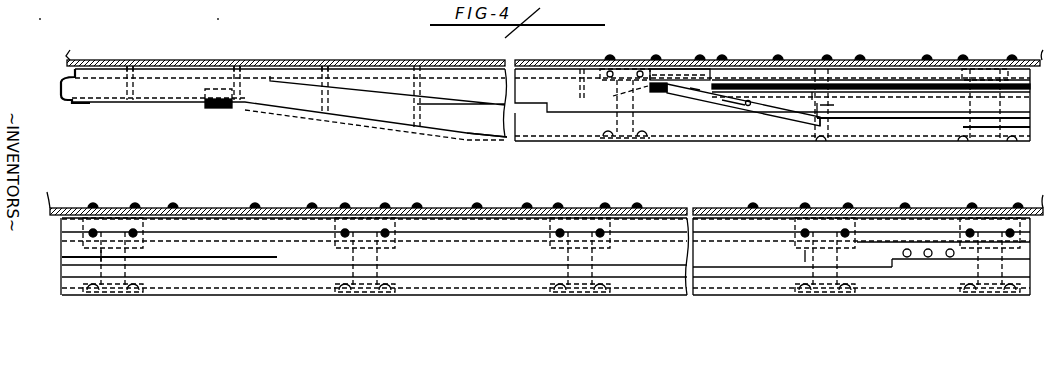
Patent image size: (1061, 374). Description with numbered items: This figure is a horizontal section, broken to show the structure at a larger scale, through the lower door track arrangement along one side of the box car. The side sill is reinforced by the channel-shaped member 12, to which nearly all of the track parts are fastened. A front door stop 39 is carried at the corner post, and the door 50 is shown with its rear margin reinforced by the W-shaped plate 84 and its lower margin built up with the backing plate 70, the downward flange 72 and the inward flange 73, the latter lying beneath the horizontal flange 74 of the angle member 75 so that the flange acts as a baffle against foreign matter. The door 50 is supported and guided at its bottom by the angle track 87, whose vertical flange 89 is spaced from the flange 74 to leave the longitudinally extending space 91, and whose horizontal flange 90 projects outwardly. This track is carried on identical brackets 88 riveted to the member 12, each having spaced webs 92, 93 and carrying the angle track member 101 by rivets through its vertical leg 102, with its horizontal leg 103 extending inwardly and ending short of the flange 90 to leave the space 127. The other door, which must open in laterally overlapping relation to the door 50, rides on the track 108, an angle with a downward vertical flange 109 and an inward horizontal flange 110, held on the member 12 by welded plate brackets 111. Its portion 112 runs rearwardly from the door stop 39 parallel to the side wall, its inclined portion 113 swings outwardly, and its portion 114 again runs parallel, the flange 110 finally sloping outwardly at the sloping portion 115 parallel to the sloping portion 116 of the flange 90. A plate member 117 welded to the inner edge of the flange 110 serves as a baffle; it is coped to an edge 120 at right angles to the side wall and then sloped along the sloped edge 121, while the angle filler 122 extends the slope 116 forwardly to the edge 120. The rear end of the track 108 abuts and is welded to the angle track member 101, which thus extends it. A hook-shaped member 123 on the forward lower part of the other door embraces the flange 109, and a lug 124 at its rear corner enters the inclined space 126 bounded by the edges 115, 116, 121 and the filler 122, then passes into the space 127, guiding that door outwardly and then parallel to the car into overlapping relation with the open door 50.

The channel-shaped member 12 is at (318, 62).
The front door stop 39 is at (62, 102).
The door 50 is at (40, 10).
The backing plate 70 is at (795, 92).
The downward flange 72 is at (813, 98).
The inward flange 73 is at (1028, 67).
The horizontal flange 74 is at (898, 79).
The angle member 75 is at (842, 77).
The W-shaped plate 84 is at (218, 10).
The angle track 87 is at (930, 106).
The brackets 88 is at (630, 69).
The vertical flange 89 is at (870, 81).
The horizontal flange 90 is at (1017, 108).
The longitudinally extending space 91 is at (315, 234).
The web 92 is at (91, 257).
The web 93 is at (857, 111).
The angle track member 101 is at (887, 138).
The vertical leg 102 is at (839, 140).
The horizontal leg 103 is at (908, 132).
The track 108 is at (470, 138).
The vertical flange 109 is at (102, 104).
The horizontal flange 110 is at (190, 84).
The plate brackets 111 is at (132, 66).
The track portion 112 is at (154, 96).
The inclined portion 113 is at (362, 124).
The track portion 114 is at (704, 127).
The sloping portion 115 is at (771, 111).
The sloping portion 116 is at (748, 101).
The plate member 117 is at (447, 90).
The edge 120 is at (612, 96).
The sloped edge 121 is at (696, 99).
The angle filler 122 is at (678, 74).
The hook-shaped member 123 is at (219, 110).
The lug 124 is at (663, 92).
The inclined space 126 is at (732, 104).
The space 127 is at (939, 120).